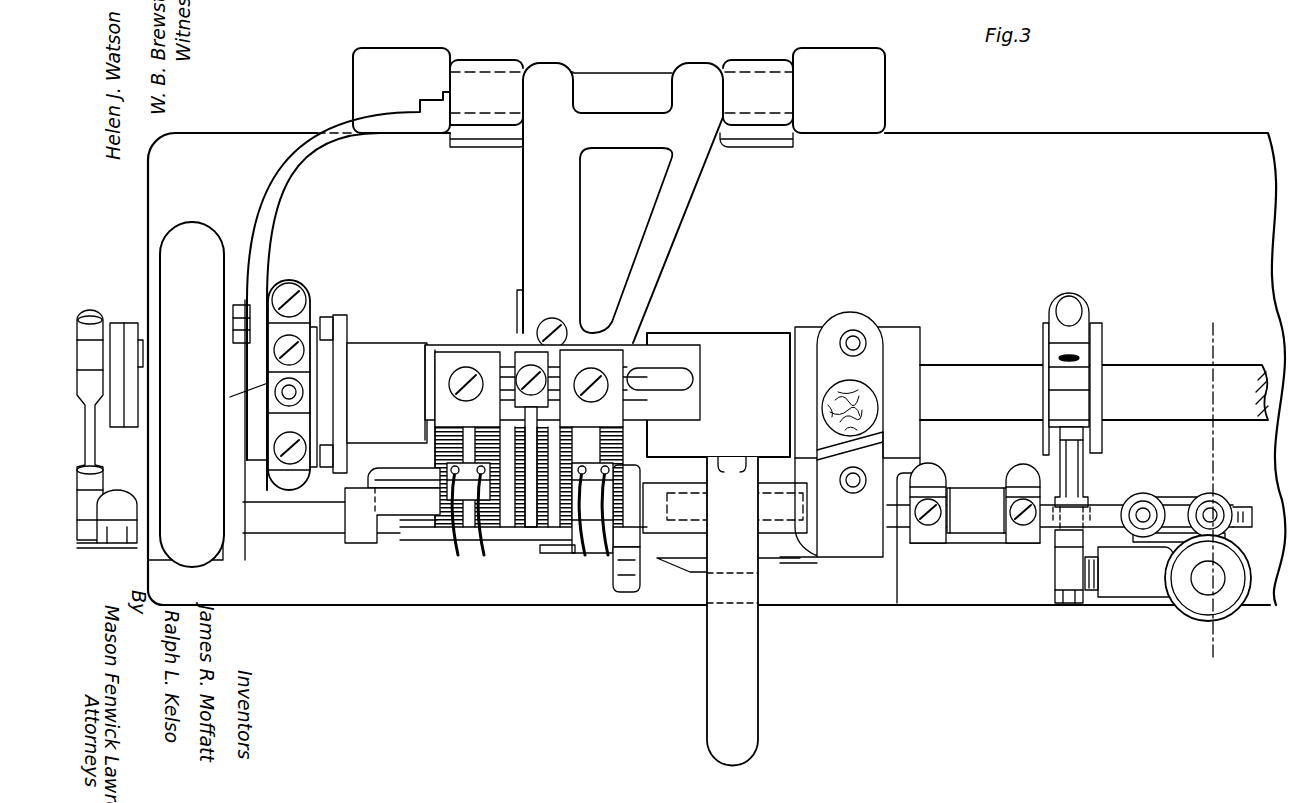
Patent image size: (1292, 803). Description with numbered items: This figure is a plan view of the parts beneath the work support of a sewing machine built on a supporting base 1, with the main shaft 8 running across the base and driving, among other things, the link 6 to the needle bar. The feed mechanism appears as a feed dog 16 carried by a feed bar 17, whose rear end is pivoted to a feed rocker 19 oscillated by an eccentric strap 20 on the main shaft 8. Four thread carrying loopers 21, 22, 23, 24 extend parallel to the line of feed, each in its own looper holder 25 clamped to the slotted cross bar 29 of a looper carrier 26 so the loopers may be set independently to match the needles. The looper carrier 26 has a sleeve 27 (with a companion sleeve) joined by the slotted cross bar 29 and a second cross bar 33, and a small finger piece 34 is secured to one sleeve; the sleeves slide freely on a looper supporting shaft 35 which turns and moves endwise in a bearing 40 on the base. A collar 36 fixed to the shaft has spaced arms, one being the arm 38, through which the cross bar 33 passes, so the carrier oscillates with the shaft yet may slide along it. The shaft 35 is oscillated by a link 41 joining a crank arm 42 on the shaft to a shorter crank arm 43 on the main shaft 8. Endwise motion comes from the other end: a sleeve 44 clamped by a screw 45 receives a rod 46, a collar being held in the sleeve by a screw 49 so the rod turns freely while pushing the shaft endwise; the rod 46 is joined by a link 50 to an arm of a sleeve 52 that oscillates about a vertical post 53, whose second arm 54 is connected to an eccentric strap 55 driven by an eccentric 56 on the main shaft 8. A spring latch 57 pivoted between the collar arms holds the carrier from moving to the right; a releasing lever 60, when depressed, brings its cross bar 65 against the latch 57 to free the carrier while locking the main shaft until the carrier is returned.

The supporting base 1 is at (716, 369).
The link 6 is at (1211, 489).
The main shaft 8 is at (982, 387).
The feed dog 16 is at (490, 433).
The feed bar 17 is at (540, 227).
The feed rocker 19 is at (558, 62).
The eccentric strap 20 is at (297, 317).
The looper 21 is at (458, 550).
The looper 22 is at (487, 553).
The looper 23 is at (597, 538).
The looper 24 is at (610, 557).
The looper holder 25 is at (480, 478).
The looper carrier 26 is at (380, 473).
The sleeve 27 is at (362, 533).
The slotted cross bar 29 is at (196, 394).
The cross bar 33 is at (500, 540).
The finger piece 34 is at (627, 580).
The looper supporting shaft 35 is at (300, 520).
The collar 36 is at (600, 540).
The arm 38 is at (557, 548).
The bearing 40 is at (850, 457).
The link 41 is at (92, 437).
The crank arm 42 is at (117, 517).
The crank arm 43 is at (127, 337).
The sleeve 44 is at (970, 507).
The screw 45 is at (933, 515).
The rod 46 is at (1108, 513).
The screw 49 is at (1027, 515).
The link 50 is at (1177, 515).
The sleeve 52 is at (1133, 582).
The vertical post 53 is at (1207, 582).
The arm 54 is at (1167, 580).
The eccentric strap 55 is at (1083, 445).
The eccentric 56 is at (1090, 358).
The spring latch 57 is at (1227, 540).
The releasing lever 60 is at (742, 676).
The cross bar 65 is at (687, 567).